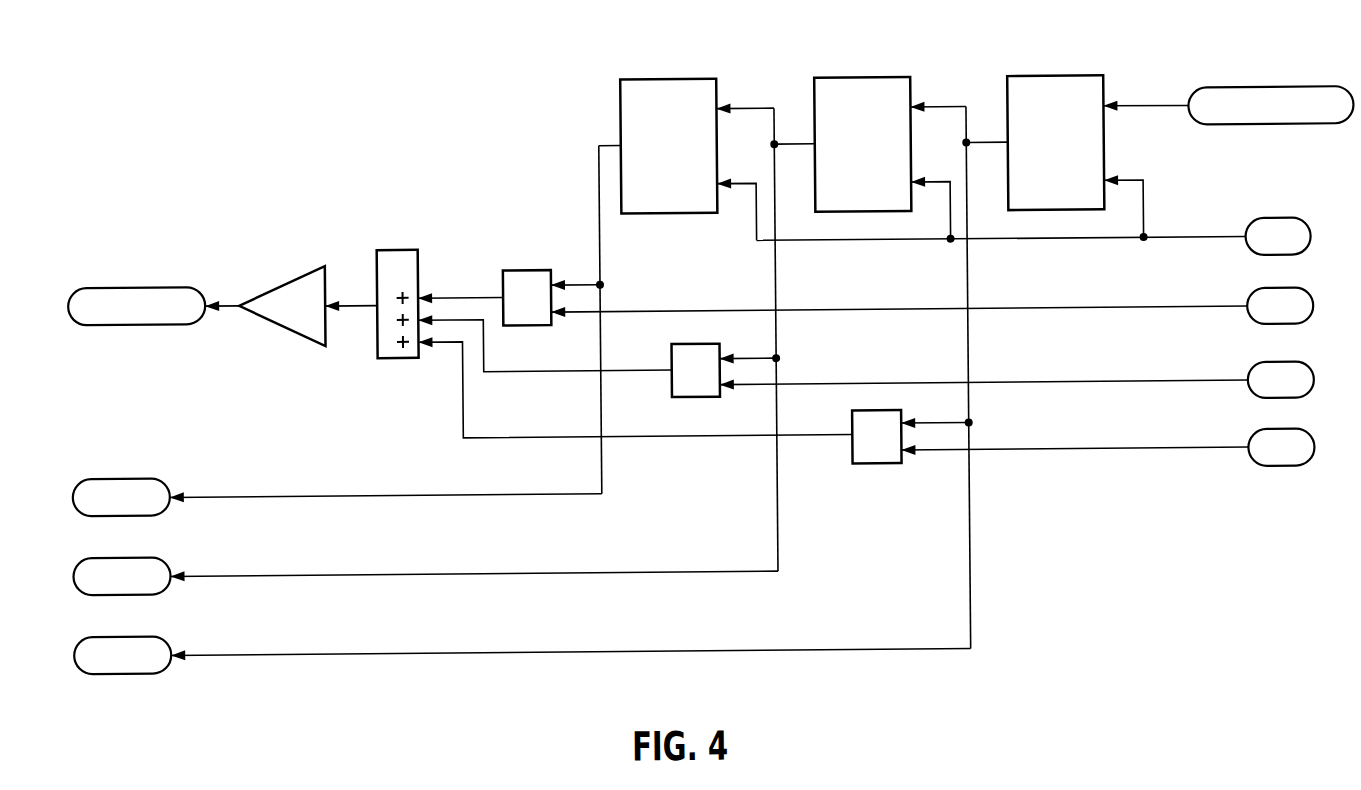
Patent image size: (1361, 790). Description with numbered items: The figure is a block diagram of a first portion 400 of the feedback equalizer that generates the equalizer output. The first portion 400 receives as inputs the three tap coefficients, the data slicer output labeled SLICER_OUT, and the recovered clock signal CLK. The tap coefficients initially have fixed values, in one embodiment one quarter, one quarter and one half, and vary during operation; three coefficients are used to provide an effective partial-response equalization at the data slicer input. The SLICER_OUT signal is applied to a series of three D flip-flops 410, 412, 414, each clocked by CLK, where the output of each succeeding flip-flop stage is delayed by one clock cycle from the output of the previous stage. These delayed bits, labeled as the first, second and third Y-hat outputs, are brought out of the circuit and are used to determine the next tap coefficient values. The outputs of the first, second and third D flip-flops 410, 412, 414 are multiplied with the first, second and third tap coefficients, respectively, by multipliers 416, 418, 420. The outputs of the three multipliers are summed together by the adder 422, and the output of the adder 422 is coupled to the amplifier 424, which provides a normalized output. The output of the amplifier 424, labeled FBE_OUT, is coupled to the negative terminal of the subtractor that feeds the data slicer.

The first portion 400 is at (902, 727).
The first D flip-flop 410 is at (1107, 80).
The second D flip-flop 412 is at (915, 79).
The third D flip-flop 414 is at (720, 85).
The multiplier 416 is at (851, 461).
The multiplier 418 is at (699, 344).
The multiplier 420 is at (528, 269).
The adder 422 is at (395, 247).
The amplifier 424 is at (281, 283).